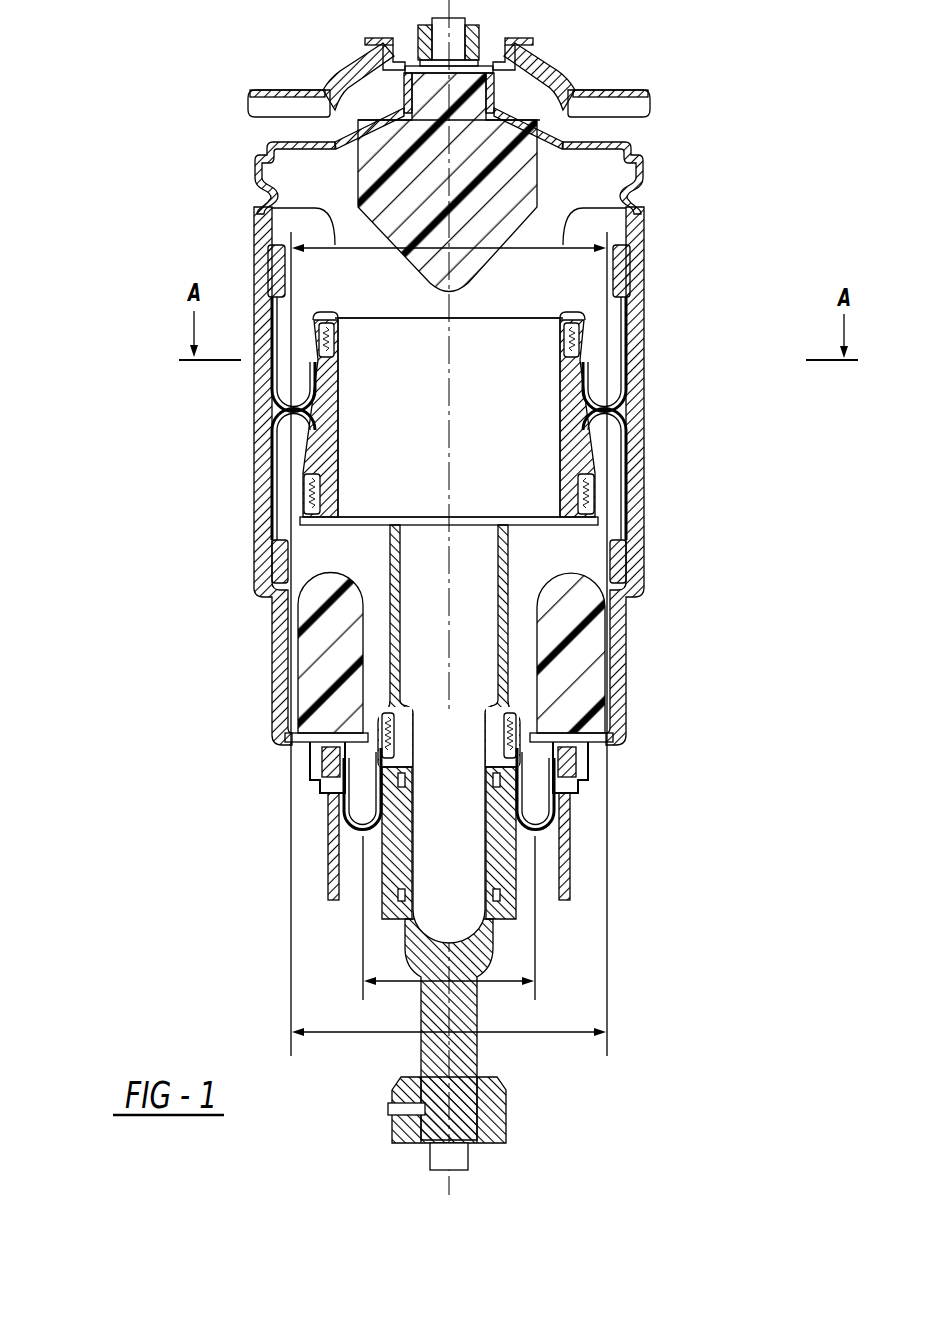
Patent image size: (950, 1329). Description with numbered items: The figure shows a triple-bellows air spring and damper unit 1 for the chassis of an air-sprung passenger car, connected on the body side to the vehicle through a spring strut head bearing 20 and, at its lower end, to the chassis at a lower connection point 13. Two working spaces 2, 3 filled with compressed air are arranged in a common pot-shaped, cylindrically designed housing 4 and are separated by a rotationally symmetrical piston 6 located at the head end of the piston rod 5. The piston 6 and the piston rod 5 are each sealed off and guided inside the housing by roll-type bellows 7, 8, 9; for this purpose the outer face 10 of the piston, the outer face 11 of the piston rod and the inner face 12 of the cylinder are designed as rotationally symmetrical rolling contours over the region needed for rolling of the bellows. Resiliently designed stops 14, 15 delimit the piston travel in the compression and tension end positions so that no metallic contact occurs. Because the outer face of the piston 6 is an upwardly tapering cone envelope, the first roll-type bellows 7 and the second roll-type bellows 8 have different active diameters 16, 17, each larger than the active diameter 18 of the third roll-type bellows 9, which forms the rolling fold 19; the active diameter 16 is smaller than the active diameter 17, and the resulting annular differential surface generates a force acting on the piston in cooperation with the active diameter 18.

The air spring and damper unit 1 is at (641, 57).
The working space 2 is at (587, 213).
The working space 3 is at (577, 553).
The housing 4 is at (264, 397).
The piston rod 5 is at (470, 658).
The piston 6 is at (525, 388).
The first roll-type bellows 7 is at (636, 357).
The second roll-type bellows 8 is at (628, 476).
The third roll-type bellows 9 is at (568, 809).
The outer face of the piston 10 is at (600, 413).
The outer face of the piston rod 11 is at (530, 861).
The inner face of the cylinder 12 is at (613, 333).
The lower connection point 13 is at (480, 1107).
The resilient stop 14 is at (512, 178).
The resilient stop 15 is at (580, 616).
The active diameter of the first roll-type bellows 16 is at (254, 209).
The active diameter of the second roll-type bellows 17 is at (343, 1032).
The active diameter of the third roll-type bellows 18 is at (390, 978).
The rolling fold 19 is at (343, 841).
The spring strut head bearing 20 is at (357, 82).